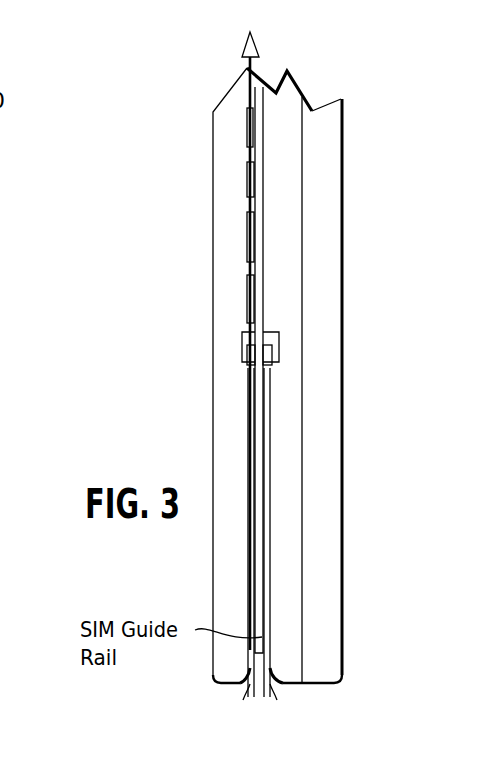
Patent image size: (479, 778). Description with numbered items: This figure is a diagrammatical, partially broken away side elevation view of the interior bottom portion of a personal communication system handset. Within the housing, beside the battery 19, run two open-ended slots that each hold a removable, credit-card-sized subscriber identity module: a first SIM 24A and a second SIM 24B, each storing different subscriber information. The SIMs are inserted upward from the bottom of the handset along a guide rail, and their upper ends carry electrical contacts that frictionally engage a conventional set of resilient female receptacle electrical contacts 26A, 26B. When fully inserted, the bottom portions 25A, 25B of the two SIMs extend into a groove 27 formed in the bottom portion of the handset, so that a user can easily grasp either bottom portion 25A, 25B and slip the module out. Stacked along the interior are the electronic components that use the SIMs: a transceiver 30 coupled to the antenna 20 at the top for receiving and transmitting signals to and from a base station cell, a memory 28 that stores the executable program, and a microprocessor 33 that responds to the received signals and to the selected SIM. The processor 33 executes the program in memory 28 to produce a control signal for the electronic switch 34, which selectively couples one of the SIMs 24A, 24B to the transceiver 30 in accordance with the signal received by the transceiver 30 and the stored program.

The antenna 20 is at (261, 51).
The transceiver 30 is at (247, 131).
The memory 28 is at (247, 183).
The microprocessor 33 is at (247, 232).
The electronic switch 34 is at (247, 304).
The resilient female receptacle electrical contact 26A is at (242, 347).
The resilient female receptacle electrical contact 26B is at (280, 348).
The subscriber identity module 24A is at (250, 559).
The subscriber identity module 24B is at (272, 559).
The battery 19 is at (340, 637).
The bottom portion of SIM 25A is at (251, 684).
The bottom portion of SIM 25B is at (272, 686).
The groove 27 is at (287, 686).